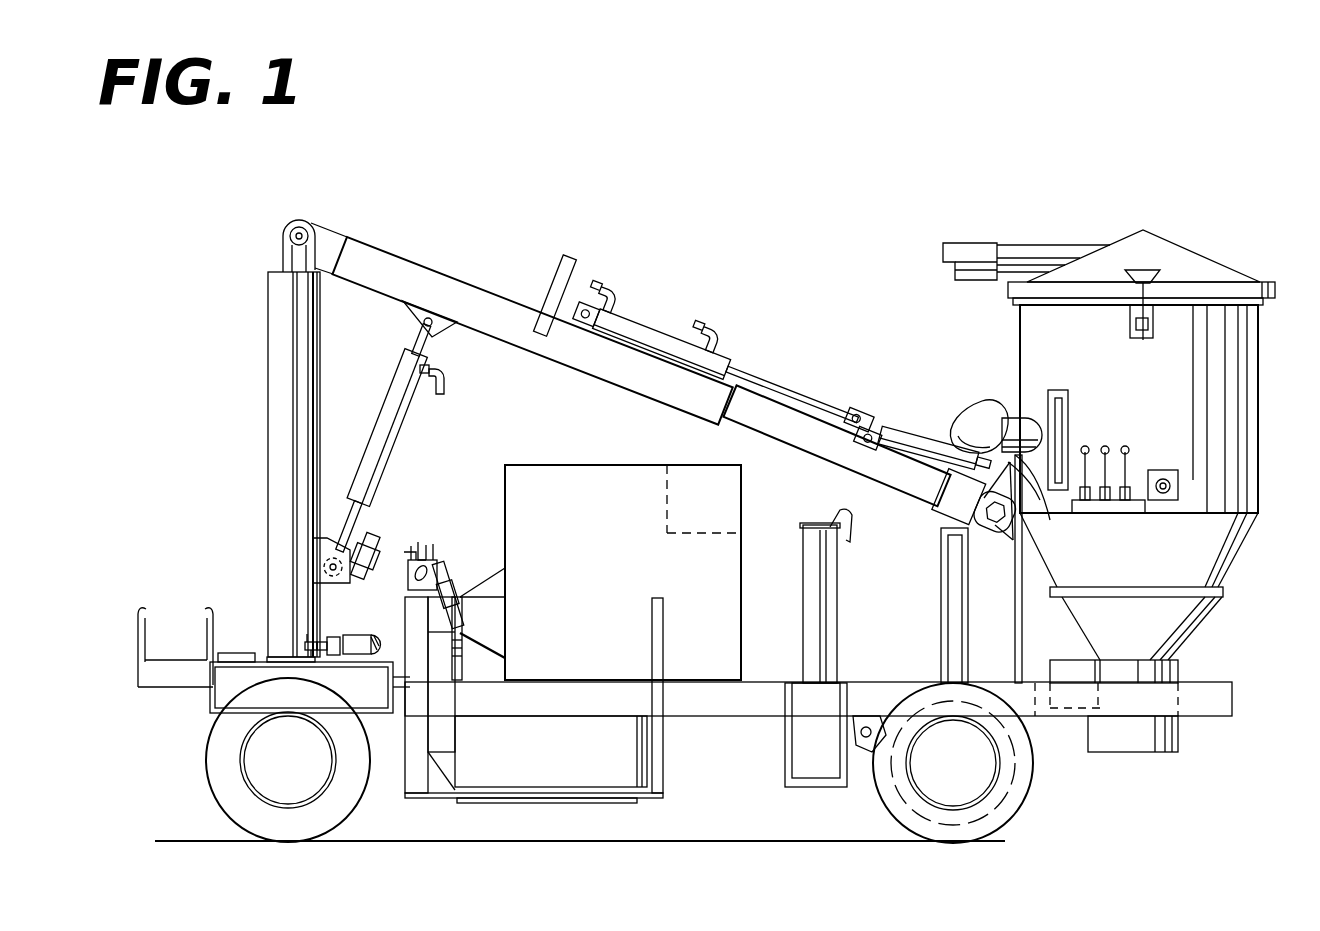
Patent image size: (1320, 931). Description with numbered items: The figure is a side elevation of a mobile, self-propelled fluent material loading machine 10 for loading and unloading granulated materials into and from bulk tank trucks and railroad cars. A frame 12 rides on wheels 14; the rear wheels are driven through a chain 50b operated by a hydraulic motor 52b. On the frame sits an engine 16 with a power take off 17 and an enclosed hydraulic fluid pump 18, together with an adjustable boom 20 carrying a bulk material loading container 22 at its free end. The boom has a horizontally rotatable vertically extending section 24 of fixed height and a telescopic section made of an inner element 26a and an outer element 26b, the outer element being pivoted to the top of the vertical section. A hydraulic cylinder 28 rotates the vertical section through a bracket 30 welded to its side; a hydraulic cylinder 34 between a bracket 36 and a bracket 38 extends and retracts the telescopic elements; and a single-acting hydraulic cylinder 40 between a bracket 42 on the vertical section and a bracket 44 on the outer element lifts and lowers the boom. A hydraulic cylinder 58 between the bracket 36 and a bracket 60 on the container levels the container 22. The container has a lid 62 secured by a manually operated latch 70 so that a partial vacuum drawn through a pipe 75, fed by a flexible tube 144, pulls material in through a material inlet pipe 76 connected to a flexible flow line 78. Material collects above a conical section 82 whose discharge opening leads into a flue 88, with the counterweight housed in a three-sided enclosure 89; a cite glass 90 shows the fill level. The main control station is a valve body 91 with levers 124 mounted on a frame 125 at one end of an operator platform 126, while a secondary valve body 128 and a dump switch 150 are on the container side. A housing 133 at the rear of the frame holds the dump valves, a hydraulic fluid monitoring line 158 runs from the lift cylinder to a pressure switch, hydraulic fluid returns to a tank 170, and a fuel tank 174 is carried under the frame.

The fluent material loading machine 10 is at (748, 302).
The frame 12 is at (1232, 702).
The wheels 14 is at (210, 766).
The engine 16 is at (745, 598).
The power take off 17 is at (488, 585).
The hydraulic fluid pump 18 is at (686, 490).
The adjustable boom 20 is at (368, 288).
The bulk material loading container 22 is at (1265, 372).
The vertically extending section 24 is at (270, 378).
The inner element 26a is at (818, 447).
The outer element 26b is at (583, 365).
The hydraulic cylinder 28 is at (360, 636).
The bracket 30 is at (305, 645).
The hydraulic cylinder 34 is at (648, 320).
The bracket 36 is at (845, 410).
The bracket 38 is at (568, 300).
The hydraulic cylinder 40 is at (400, 445).
The bracket 42 is at (313, 560).
The bracket 44 is at (450, 325).
The chain 50b is at (880, 765).
The hydraulic motor 52b is at (866, 716).
The hydraulic cylinder 58 is at (922, 425).
The bracket 60 is at (1046, 505).
The container lid 62 is at (1192, 254).
The manually operated latch 70 is at (1148, 272).
The pipe 75 is at (1040, 245).
The material inlet pipe 76 is at (1022, 424).
The flexible flow line 78 is at (983, 406).
The conical section 82 is at (1088, 625).
The flue 88 is at (1112, 750).
The three-sided enclosure 89 is at (1068, 665).
The cite glass 90 is at (1068, 405).
The valve body 91 is at (437, 553).
The levers 124 is at (468, 605).
The frame 125 is at (440, 725).
The operator platform 126 is at (580, 788).
The valve body 128 is at (1132, 452).
The housing 133 is at (238, 652).
The flexible tube 144 is at (963, 245).
The switch 150 is at (1163, 478).
The hydraulic fluid monitoring line 158 is at (376, 538).
The tank 170 is at (540, 790).
The tank 174 is at (730, 780).